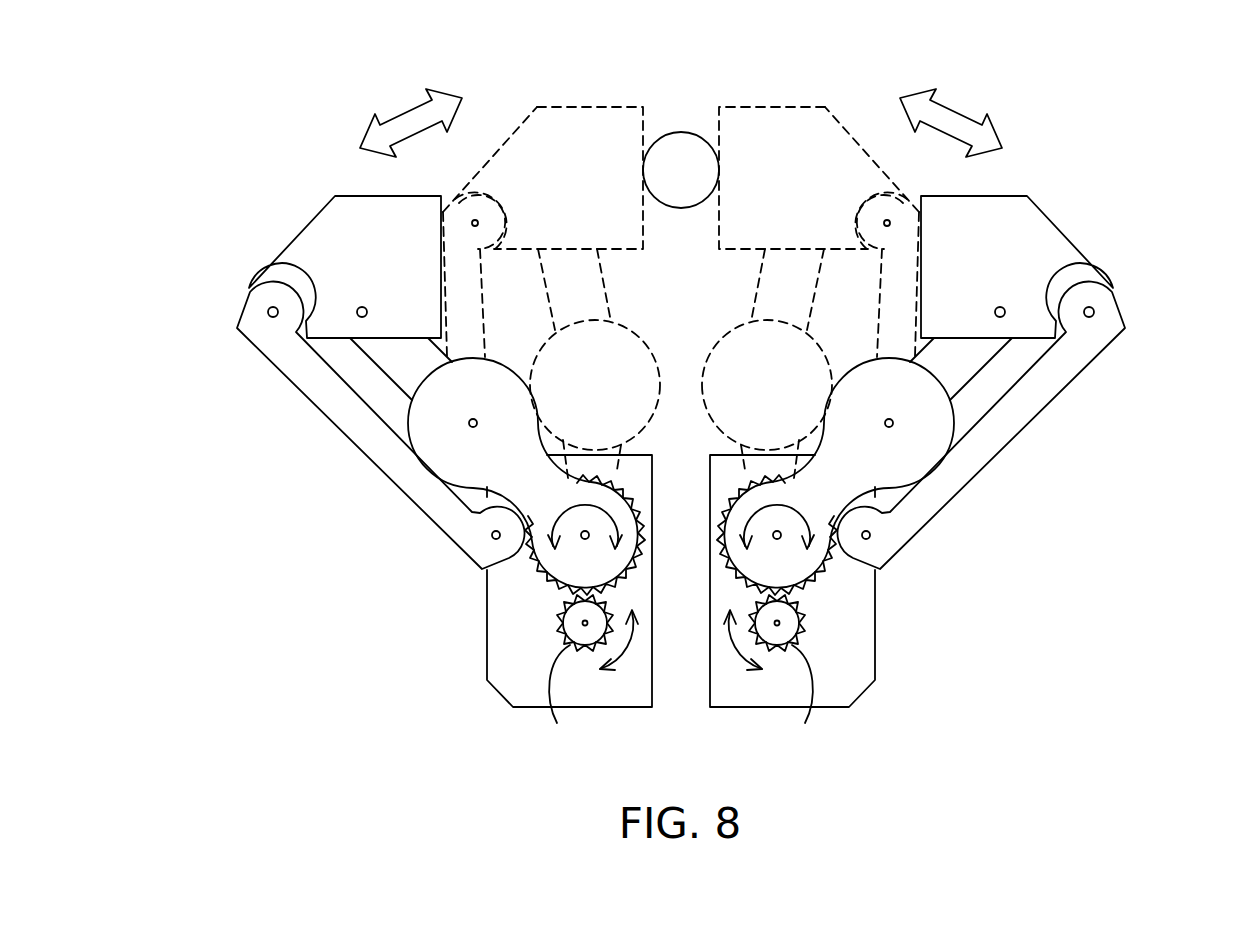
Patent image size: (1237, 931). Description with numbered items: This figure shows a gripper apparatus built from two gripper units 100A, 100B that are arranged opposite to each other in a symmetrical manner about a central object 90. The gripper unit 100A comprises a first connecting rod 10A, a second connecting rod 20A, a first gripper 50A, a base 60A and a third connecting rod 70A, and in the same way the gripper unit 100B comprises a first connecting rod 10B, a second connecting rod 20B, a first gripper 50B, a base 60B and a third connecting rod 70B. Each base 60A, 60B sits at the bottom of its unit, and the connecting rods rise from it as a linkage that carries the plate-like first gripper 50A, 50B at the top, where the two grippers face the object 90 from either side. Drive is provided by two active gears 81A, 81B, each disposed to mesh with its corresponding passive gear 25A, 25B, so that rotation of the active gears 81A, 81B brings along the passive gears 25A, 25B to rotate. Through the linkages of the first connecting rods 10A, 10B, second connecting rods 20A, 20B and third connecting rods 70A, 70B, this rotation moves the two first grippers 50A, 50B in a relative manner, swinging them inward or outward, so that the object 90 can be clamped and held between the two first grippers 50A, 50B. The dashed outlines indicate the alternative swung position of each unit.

The gripper unit 100A is at (960, 423).
The gripper unit 100B is at (246, 205).
The first connecting rod 10A is at (1020, 383).
The first connecting rod 10B is at (395, 362).
The second connecting rod 20A is at (837, 480).
The second connecting rod 20B is at (528, 487).
The passive gear 25A is at (845, 627).
The passive gear 25B is at (545, 585).
The first gripper 50A is at (1017, 249).
The first gripper 50B is at (327, 225).
The base 60A is at (840, 581).
The base 60B is at (498, 673).
The third connecting rod 70A is at (981, 425).
The third connecting rod 70B is at (367, 438).
The active gear 81A is at (805, 701).
The active gear 81B is at (557, 701).
The object 90 is at (682, 146).